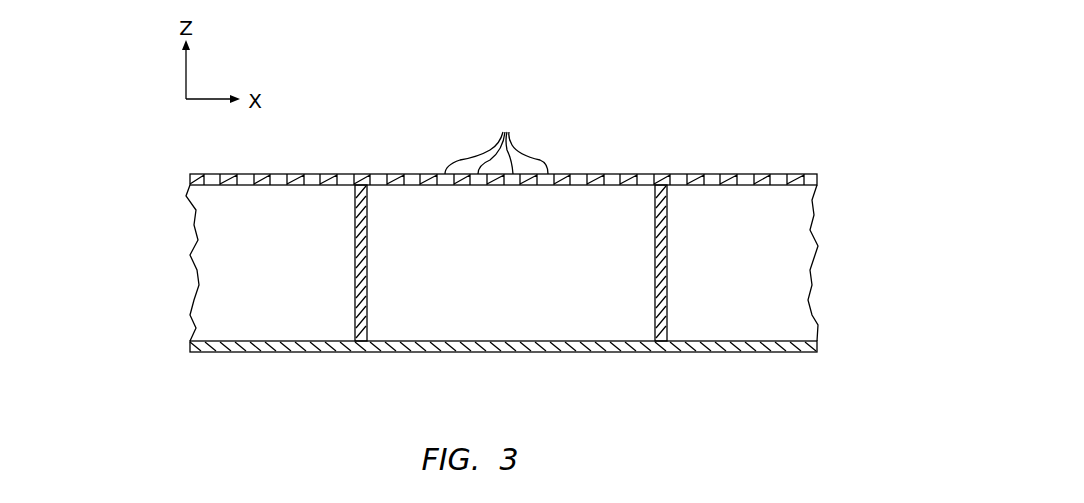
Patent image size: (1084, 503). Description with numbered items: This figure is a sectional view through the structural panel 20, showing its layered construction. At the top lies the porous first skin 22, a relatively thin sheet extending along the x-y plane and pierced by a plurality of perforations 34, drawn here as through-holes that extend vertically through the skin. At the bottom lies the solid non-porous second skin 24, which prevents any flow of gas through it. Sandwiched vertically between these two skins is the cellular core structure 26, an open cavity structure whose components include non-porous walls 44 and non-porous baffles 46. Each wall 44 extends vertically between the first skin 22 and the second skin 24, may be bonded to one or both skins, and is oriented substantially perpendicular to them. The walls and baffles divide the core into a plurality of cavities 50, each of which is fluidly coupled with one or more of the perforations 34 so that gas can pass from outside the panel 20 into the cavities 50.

The structural panel 20 is at (735, 110).
The porous first skin 22 is at (190, 182).
The solid non-porous second skin 24 is at (190, 346).
The cellular core structure 26 is at (150, 185).
The perforations 34 is at (496, 141).
The non-porous walls 44 is at (367, 313).
The non-porous baffles 46 is at (275, 315).
The cavities 50 is at (300, 318).